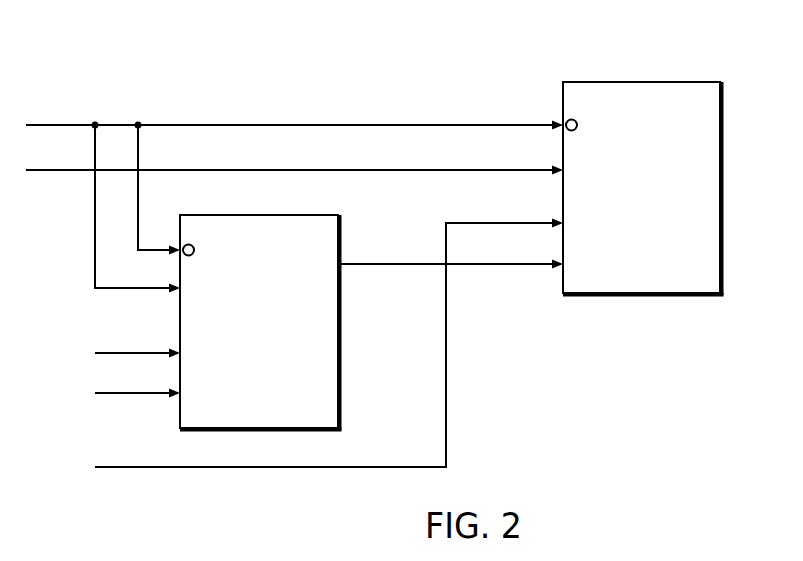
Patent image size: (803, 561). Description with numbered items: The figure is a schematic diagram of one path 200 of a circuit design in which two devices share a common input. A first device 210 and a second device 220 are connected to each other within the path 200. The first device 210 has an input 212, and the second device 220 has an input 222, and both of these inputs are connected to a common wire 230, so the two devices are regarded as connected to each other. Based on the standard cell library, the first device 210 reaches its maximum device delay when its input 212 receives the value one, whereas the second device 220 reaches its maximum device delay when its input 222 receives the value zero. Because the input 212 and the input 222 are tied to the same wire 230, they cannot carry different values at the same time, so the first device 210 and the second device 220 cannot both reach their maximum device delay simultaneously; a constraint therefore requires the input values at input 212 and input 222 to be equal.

The path 200 is at (170, 52).
The first device 210 is at (341, 345).
The input of the first device 212 is at (196, 251).
The second device 220 is at (723, 192).
The input of the second device 222 is at (579, 126).
The common wire 230 is at (326, 118).